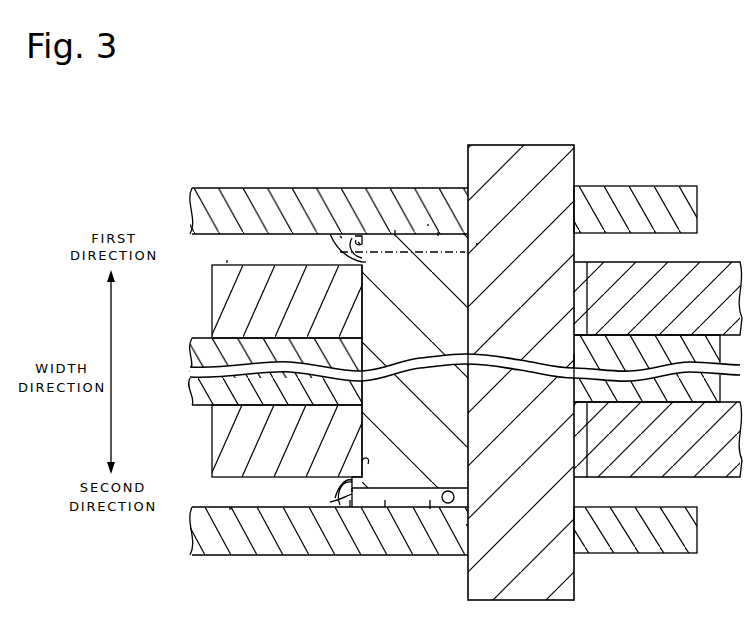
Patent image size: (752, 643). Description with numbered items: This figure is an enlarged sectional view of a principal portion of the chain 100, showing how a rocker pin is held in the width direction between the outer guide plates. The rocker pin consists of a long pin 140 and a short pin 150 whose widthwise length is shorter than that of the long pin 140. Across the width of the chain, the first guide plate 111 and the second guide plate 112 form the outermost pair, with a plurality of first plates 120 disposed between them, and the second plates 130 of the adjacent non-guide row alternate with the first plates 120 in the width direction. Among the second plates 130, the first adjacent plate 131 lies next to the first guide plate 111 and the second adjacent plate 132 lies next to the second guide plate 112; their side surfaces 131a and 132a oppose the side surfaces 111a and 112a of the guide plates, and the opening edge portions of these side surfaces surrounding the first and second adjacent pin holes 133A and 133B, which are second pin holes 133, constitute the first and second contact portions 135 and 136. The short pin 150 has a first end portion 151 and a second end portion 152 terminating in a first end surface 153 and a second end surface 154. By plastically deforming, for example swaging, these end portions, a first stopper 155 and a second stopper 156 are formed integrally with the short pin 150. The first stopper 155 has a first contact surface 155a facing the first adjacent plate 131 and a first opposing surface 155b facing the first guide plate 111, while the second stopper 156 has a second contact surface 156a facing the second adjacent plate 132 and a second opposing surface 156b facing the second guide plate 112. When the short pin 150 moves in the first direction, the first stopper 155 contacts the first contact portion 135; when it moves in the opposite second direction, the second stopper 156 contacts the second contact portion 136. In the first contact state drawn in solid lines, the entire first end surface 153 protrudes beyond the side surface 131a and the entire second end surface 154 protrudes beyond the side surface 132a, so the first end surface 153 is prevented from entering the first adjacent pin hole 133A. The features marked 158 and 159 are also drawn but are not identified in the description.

The chain 100 is at (397, 76).
The long pin 140 is at (551, 142).
The short pin 150 is at (488, 236).
The side surface of second guide plate 112a is at (477, 246).
The second end surface 154 is at (428, 226).
The second end portion 152 is at (438, 236).
The portion 159 is at (395, 236).
The second stopper 156 is at (340, 236).
The second contact surface 156a is at (358, 242).
The second opposing surface 156b is at (340, 236).
The second contact portion 136 is at (364, 262).
The side surface of second adjacent plate 132a is at (227, 263).
The second adjacent pin hole 133B is at (360, 295).
The first adjacent pin hole 133A is at (362, 438).
The second pin holes 133 is at (257, 371).
The second plate 130 is at (442, 369).
The second adjacent plate 132 is at (680, 262).
The first adjacent plate 131 is at (648, 487).
The side surface of first adjacent plate 131a is at (230, 507).
The first contact portion 135 is at (350, 488).
The first stopper 155 is at (322, 506).
The first contact surface 155a is at (366, 462).
The first opposing surface 155b is at (350, 507).
The portion 158 is at (385, 507).
The first end surface 153 is at (404, 509).
The first end portion 151 is at (430, 509).
The side surface of first guide plate 111a is at (466, 522).
The first guide plate 111 is at (630, 553).
The second guide plate 112 is at (624, 222).
The first plate 120 is at (713, 262).